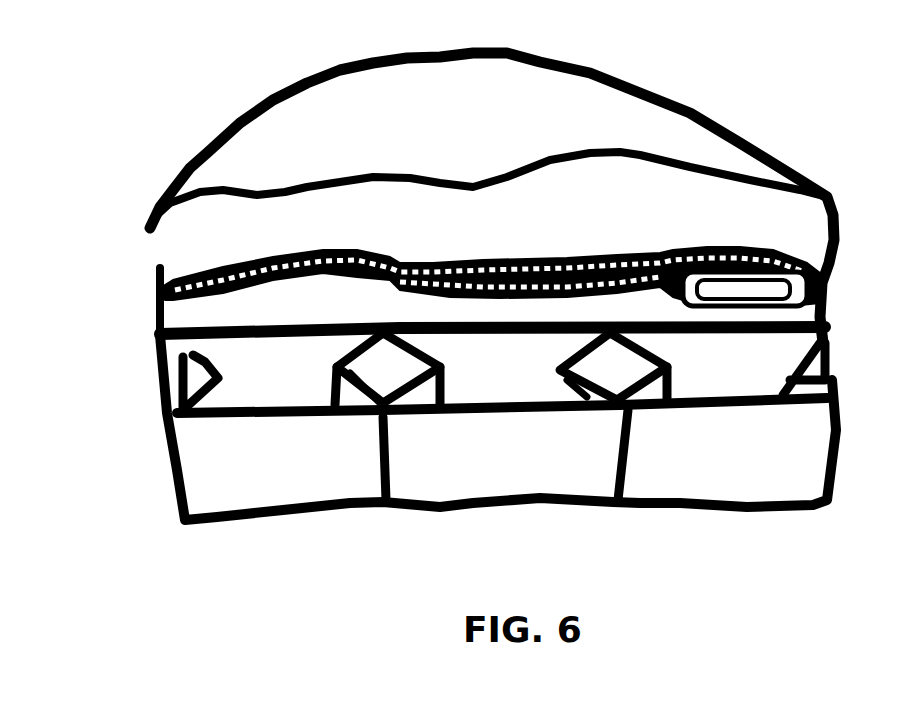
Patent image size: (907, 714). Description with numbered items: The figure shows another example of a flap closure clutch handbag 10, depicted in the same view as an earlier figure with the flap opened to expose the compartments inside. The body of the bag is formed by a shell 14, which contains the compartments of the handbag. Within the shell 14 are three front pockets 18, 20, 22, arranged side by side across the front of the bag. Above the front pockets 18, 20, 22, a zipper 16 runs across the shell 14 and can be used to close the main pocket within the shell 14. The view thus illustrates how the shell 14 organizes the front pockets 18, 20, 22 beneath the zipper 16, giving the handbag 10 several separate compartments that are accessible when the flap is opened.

The flap closure clutch handbag 10 is at (118, 360).
The shell 14 is at (837, 240).
The zipper 16 is at (157, 290).
The front pocket 18 is at (289, 390).
The front pocket 20 is at (507, 385).
The front pocket 22 is at (735, 382).